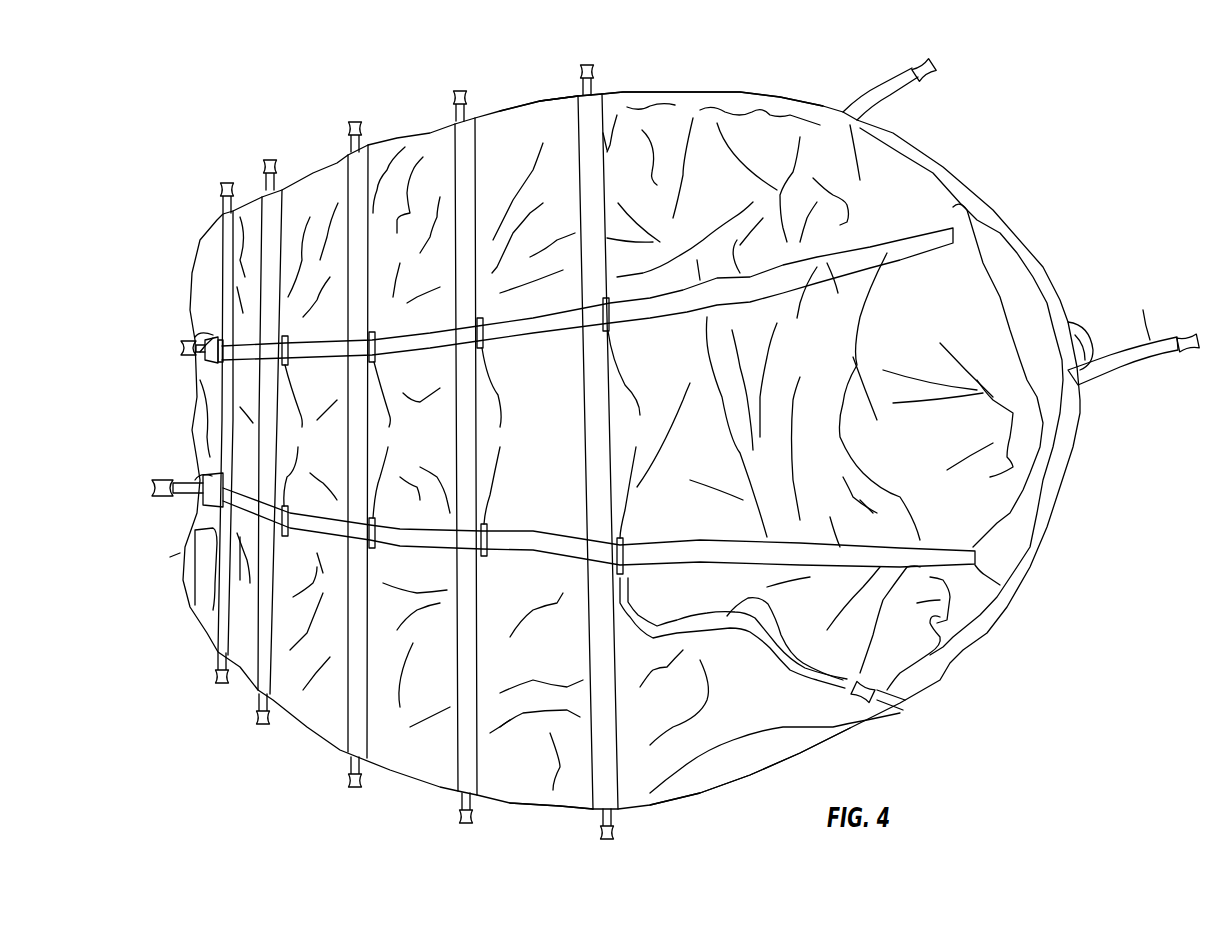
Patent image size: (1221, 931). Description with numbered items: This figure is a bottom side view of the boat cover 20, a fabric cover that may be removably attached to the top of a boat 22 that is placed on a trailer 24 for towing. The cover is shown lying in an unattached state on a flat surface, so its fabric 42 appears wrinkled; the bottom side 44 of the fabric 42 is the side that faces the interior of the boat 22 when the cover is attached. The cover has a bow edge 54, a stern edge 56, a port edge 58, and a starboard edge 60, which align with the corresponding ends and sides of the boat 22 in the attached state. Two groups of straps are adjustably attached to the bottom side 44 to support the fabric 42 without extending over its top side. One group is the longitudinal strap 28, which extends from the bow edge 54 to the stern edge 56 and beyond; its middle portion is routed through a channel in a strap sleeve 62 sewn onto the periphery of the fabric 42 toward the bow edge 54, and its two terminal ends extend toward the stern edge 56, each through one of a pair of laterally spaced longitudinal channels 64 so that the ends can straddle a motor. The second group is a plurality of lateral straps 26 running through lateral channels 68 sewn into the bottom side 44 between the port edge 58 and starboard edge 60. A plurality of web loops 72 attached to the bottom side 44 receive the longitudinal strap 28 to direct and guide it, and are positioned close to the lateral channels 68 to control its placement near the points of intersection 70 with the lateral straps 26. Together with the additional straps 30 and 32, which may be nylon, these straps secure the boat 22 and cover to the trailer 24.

The boat cover 20 is at (1005, 135).
The boat 22 is at (700, 798).
The trailer 24 is at (630, 85).
The lateral straps 26 is at (278, 218).
The longitudinal strap 28 is at (890, 313).
The strap 30 is at (1153, 343).
The strap 32 is at (875, 93).
The fabric 42 is at (1080, 181).
The bottom side 44 is at (958, 316).
The bow edge 54 is at (1052, 547).
The stern edge 56 is at (185, 552).
The port edge 58 is at (541, 806).
The starboard edge 60 is at (552, 92).
The strap sleeve 62 is at (1018, 515).
The longitudinal channels 64 is at (213, 358).
The lateral channels 68 is at (470, 163).
The points of intersection 70 is at (360, 352).
The web loops 72 is at (212, 335).